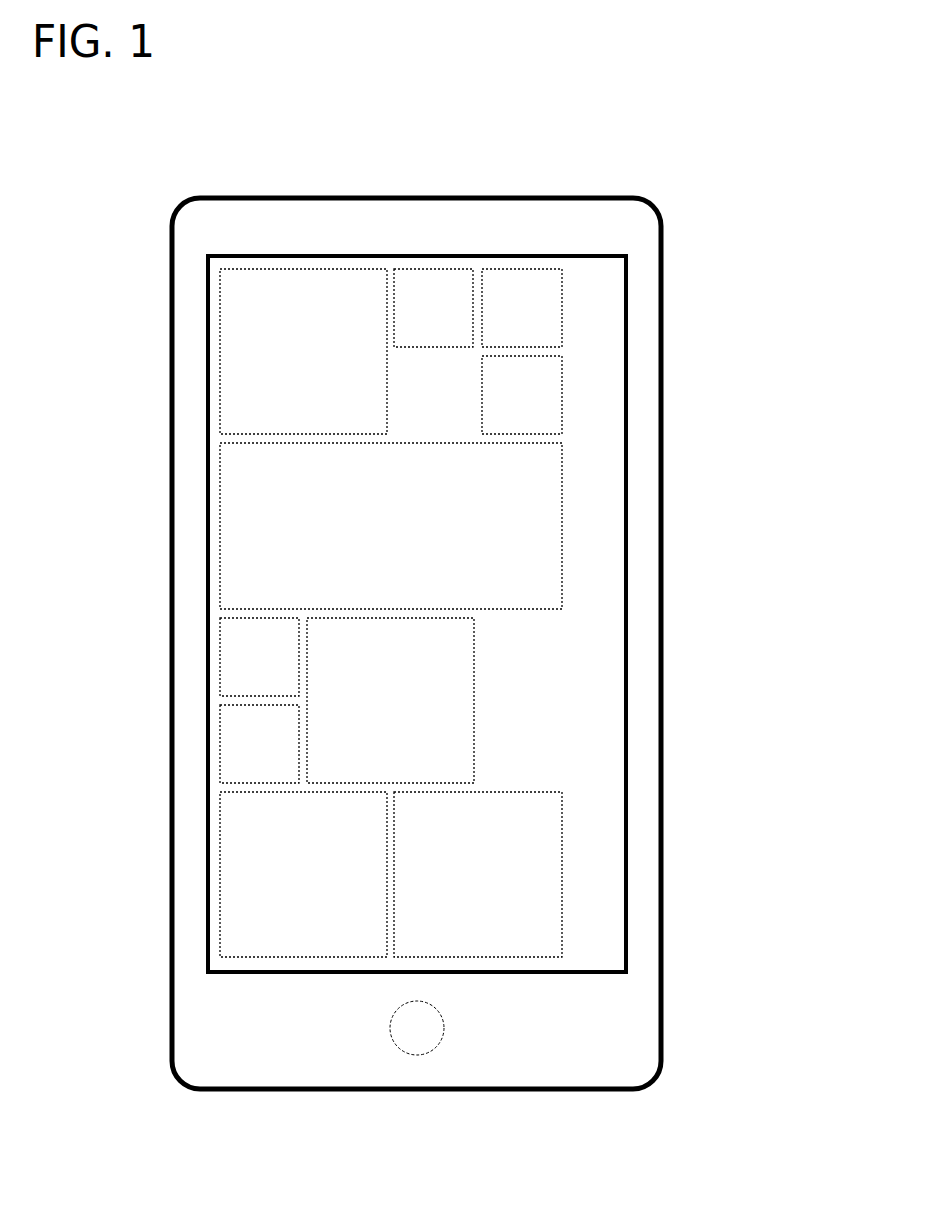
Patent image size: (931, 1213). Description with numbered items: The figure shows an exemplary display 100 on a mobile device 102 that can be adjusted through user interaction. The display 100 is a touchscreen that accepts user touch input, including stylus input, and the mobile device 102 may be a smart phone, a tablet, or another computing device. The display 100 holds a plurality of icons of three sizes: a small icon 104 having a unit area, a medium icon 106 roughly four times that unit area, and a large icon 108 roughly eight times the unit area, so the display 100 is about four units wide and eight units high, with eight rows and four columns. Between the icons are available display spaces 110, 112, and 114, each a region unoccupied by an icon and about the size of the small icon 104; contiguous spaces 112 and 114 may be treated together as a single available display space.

The display 100 is at (600, 316).
The mobile device 102 is at (702, 405).
The small icon 104 is at (420, 278).
The medium icon 106 is at (281, 330).
The large icon 108 is at (318, 501).
The available display space 110 is at (408, 391).
The available display space 112 is at (550, 650).
The available display space 114 is at (550, 743).